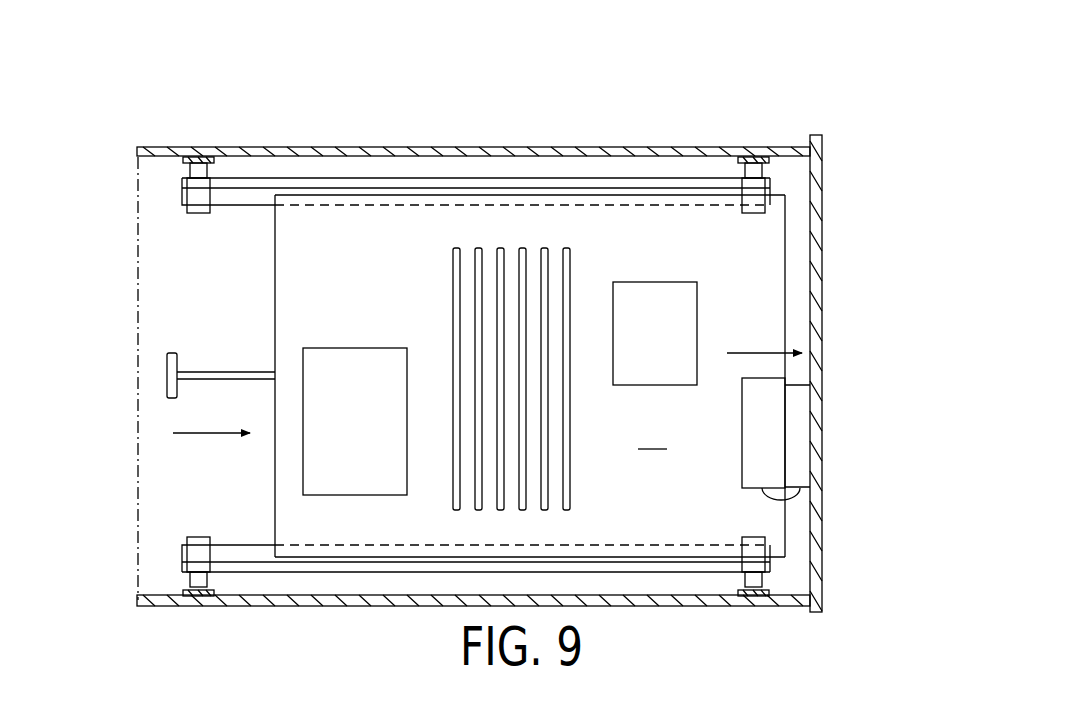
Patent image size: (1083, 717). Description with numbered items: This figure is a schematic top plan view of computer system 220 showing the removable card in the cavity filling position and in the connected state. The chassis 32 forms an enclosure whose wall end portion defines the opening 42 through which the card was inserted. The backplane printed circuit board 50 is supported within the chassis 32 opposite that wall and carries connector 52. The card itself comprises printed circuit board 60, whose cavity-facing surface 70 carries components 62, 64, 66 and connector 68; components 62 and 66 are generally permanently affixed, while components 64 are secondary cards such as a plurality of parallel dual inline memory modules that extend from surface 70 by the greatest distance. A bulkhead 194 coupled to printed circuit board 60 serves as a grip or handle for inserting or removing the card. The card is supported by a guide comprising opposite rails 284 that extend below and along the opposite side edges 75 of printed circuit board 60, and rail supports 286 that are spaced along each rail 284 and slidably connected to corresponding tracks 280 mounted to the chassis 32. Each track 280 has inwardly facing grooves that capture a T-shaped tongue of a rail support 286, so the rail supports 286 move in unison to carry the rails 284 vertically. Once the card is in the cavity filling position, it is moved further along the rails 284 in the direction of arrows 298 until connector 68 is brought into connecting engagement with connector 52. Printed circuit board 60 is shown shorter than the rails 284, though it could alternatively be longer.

The computer system 220 is at (514, 320).
The chassis 32 is at (457, 140).
The printed circuit board 50 is at (812, 518).
The opening 42 is at (138, 192).
The rails 284 is at (352, 188).
The side edges 75 is at (300, 195).
The printed circuit board 60 is at (298, 298).
The tracks 280 is at (200, 162).
The rail supports 286 is at (215, 160).
The component 62 is at (355, 348).
The component 66 is at (650, 282).
The components 64 is at (567, 483).
The surface 70 is at (653, 435).
The connector 52 is at (803, 430).
The connector 68 is at (807, 487).
The bulkhead 194 is at (165, 375).
The arrows 298 is at (213, 435).